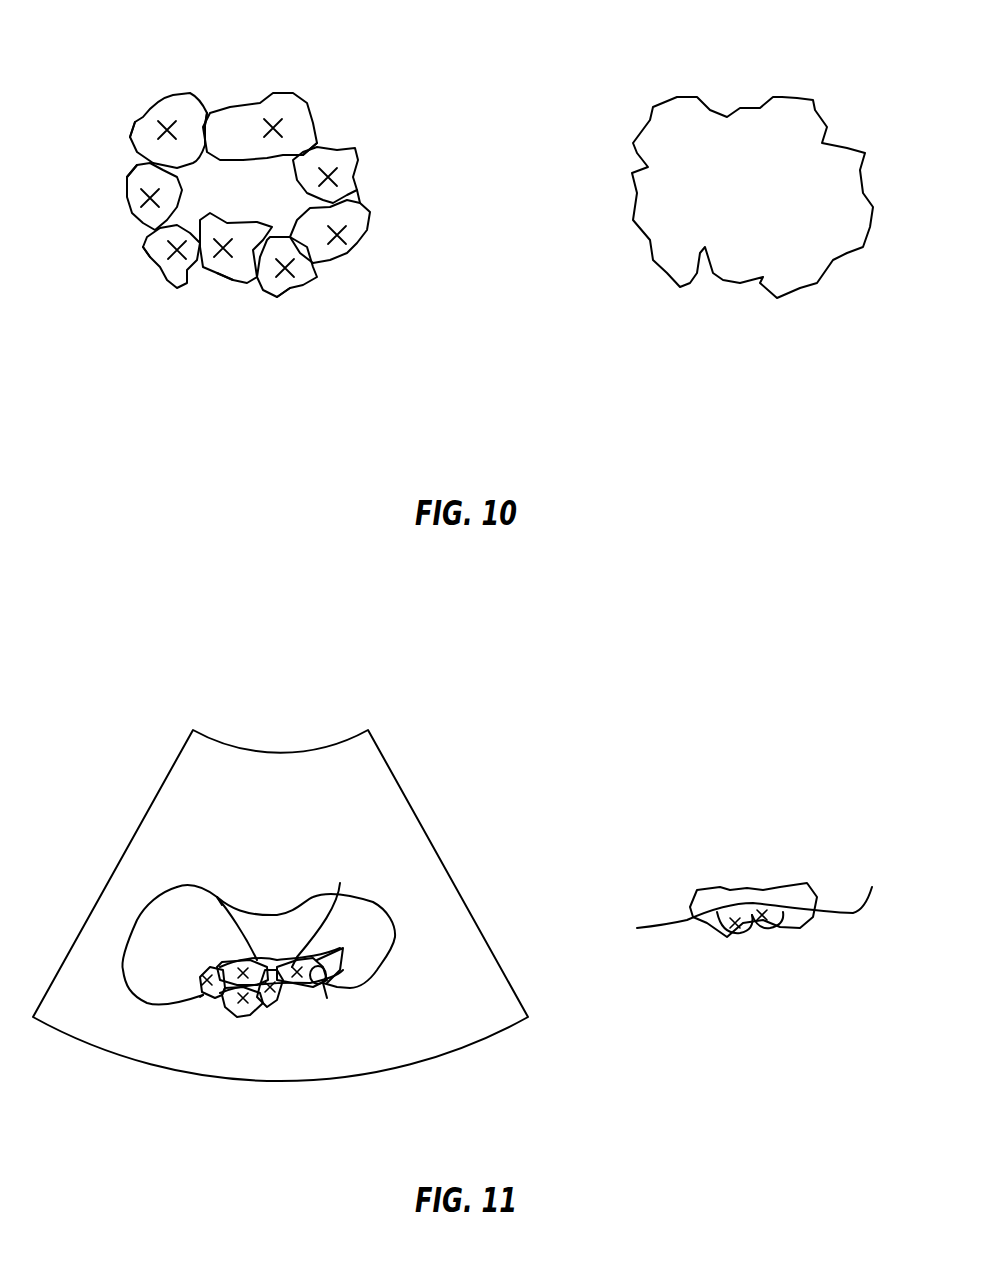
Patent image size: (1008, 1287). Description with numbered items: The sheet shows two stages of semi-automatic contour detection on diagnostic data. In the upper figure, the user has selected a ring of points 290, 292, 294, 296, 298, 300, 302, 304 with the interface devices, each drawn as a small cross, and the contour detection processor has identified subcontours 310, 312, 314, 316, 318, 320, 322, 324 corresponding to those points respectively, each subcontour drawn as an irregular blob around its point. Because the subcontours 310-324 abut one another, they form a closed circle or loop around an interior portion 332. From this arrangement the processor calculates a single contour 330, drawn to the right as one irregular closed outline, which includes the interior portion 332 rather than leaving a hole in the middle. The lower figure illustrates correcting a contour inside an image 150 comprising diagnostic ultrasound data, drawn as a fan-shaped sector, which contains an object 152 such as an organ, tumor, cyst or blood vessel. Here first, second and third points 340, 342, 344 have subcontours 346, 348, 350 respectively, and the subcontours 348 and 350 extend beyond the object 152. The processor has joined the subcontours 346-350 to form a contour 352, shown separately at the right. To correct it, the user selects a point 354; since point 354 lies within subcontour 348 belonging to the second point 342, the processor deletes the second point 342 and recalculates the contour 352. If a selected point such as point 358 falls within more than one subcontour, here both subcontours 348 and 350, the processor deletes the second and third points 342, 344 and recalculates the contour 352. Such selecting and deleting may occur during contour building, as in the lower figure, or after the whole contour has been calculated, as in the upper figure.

In FIG. 11, the image 150 is at (427, 814).
In FIG. 11, the object 152 is at (393, 947).
In FIG. 10, the point 290 is at (152, 125).
In FIG. 10, the point 292 is at (270, 122).
In FIG. 10, the point 294 is at (357, 153).
In FIG. 10, the point 296 is at (363, 240).
In FIG. 10, the point 298 is at (310, 278).
In FIG. 10, the point 300 is at (215, 270).
In FIG. 10, the point 302 is at (167, 273).
In FIG. 10, the point 304 is at (130, 207).
In FIG. 10, the subcontour 310 is at (130, 138).
In FIG. 10, the subcontour 312 is at (215, 113).
In FIG. 10, the subcontour 314 is at (322, 145).
In FIG. 10, the subcontour 316 is at (360, 213).
In FIG. 10, the subcontour 318 is at (290, 290).
In FIG. 10, the subcontour 320 is at (227, 283).
In FIG. 10, the subcontour 322 is at (145, 250).
In FIG. 10, the subcontour 324 is at (127, 177).
In FIG. 10, the single contour 330 is at (782, 97).
In FIG. 10, the interior portion 332 is at (261, 206).
In FIG. 11, the first point 340 is at (205, 972).
In FIG. 11, the second point 342 is at (255, 960).
In FIG. 11, the third point 344 is at (337, 903).
In FIG. 11, the subcontour 346 is at (200, 997).
In FIG. 11, the subcontour 348 is at (222, 905).
In FIG. 11, the subcontour 350 is at (327, 998).
In FIG. 11, the contour 352 is at (783, 887).
In FIG. 11, the point 354 is at (240, 1013).
In FIG. 11, the point 358 is at (273, 997).